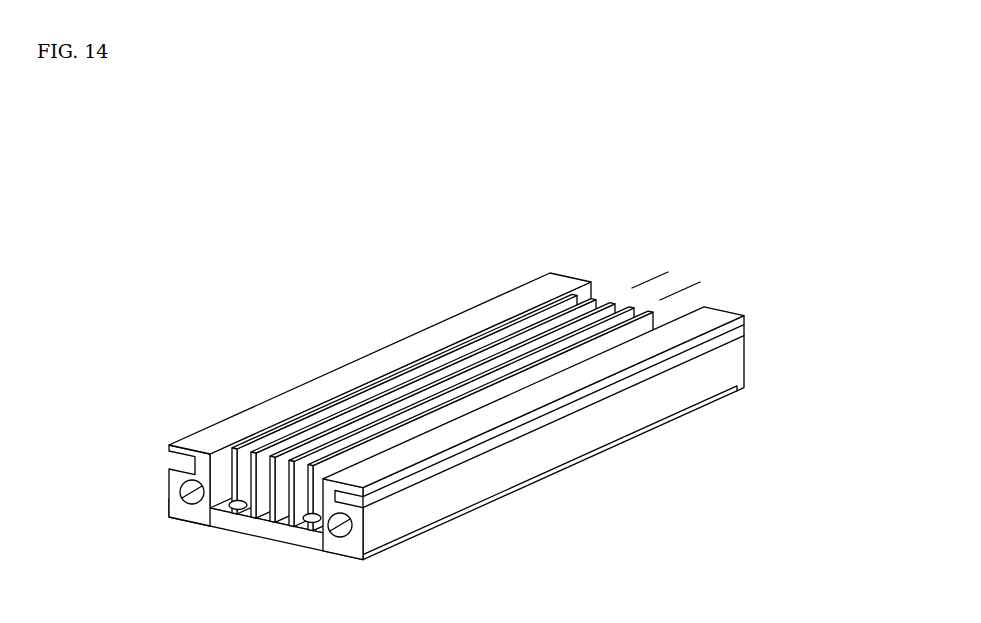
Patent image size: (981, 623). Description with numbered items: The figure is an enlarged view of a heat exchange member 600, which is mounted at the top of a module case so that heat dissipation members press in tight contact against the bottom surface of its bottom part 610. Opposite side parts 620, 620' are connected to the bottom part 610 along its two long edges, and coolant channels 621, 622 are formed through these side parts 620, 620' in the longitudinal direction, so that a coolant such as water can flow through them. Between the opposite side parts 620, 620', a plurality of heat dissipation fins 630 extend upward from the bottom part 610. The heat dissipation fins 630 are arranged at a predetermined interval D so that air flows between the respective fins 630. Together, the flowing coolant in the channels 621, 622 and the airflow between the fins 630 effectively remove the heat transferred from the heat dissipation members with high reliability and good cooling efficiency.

The heat exchange member 600 is at (126, 111).
The bottom part 610 is at (512, 490).
The side part 620 is at (415, 338).
The side part 620' is at (575, 375).
The coolant channel 621 is at (169, 500).
The coolant channel 622 is at (323, 532).
The heat dissipation fins 630 is at (453, 347).
The predetermined interval D is at (613, 273).